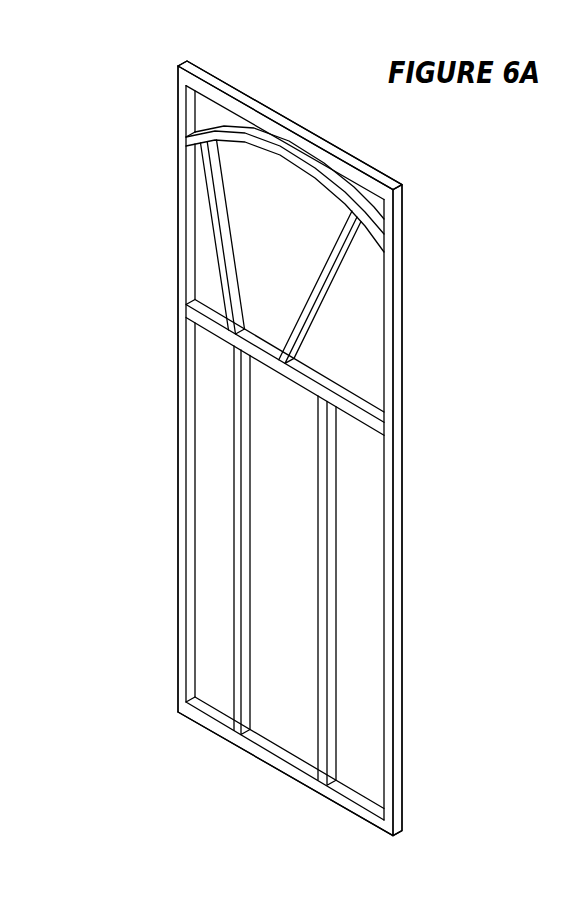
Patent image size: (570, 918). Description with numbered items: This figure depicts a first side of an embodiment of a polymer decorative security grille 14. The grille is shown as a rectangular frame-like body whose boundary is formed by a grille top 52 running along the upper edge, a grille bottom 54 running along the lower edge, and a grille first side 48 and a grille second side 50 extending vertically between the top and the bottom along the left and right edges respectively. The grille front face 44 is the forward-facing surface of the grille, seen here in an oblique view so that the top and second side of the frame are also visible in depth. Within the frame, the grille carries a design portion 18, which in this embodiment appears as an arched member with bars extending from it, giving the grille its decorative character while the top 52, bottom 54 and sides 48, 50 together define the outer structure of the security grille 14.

The decorative security grille 14 is at (426, 171).
The grille top 52 is at (285, 125).
The grille first side 48 is at (177, 223).
The grille second side 50 is at (405, 350).
The grille bottom 54 is at (286, 776).
The grille front face 44 is at (213, 344).
The design portion 18 is at (241, 237).